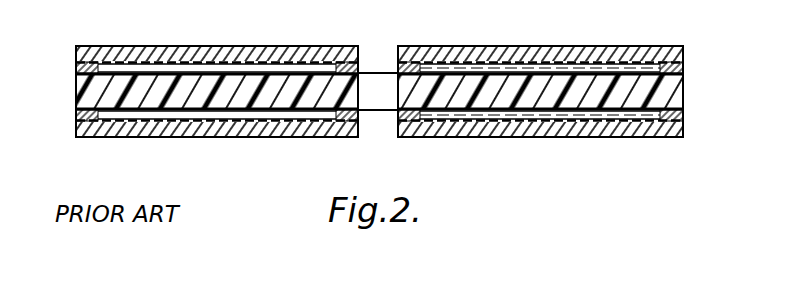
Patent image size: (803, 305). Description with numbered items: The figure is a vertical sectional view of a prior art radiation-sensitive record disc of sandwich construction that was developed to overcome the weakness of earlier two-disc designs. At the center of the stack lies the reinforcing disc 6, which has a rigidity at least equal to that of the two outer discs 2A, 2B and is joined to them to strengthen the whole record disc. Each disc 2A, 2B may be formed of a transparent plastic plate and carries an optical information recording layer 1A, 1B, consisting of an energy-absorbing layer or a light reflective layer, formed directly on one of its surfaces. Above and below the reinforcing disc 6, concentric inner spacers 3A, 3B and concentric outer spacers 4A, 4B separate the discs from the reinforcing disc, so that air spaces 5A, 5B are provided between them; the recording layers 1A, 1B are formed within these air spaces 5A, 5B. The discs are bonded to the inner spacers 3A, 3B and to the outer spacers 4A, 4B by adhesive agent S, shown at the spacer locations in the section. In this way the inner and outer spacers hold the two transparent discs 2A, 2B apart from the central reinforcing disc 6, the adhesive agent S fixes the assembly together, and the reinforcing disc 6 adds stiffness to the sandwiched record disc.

The adhesive agent S is at (90, 63).
The reinforcing disc 6 is at (217, 97).
The optical information recording layer 1A is at (517, 52).
The optical information recording layer 1B is at (522, 130).
The disc 2A is at (572, 56).
The disc 2B is at (580, 124).
The concentric inner spacer 3A is at (418, 66).
The concentric inner spacer 3B is at (418, 118).
The concentric outer spacer 4A is at (666, 62).
The concentric outer spacer 4B is at (668, 121).
The air space 5A is at (466, 67).
The air space 5B is at (478, 116).